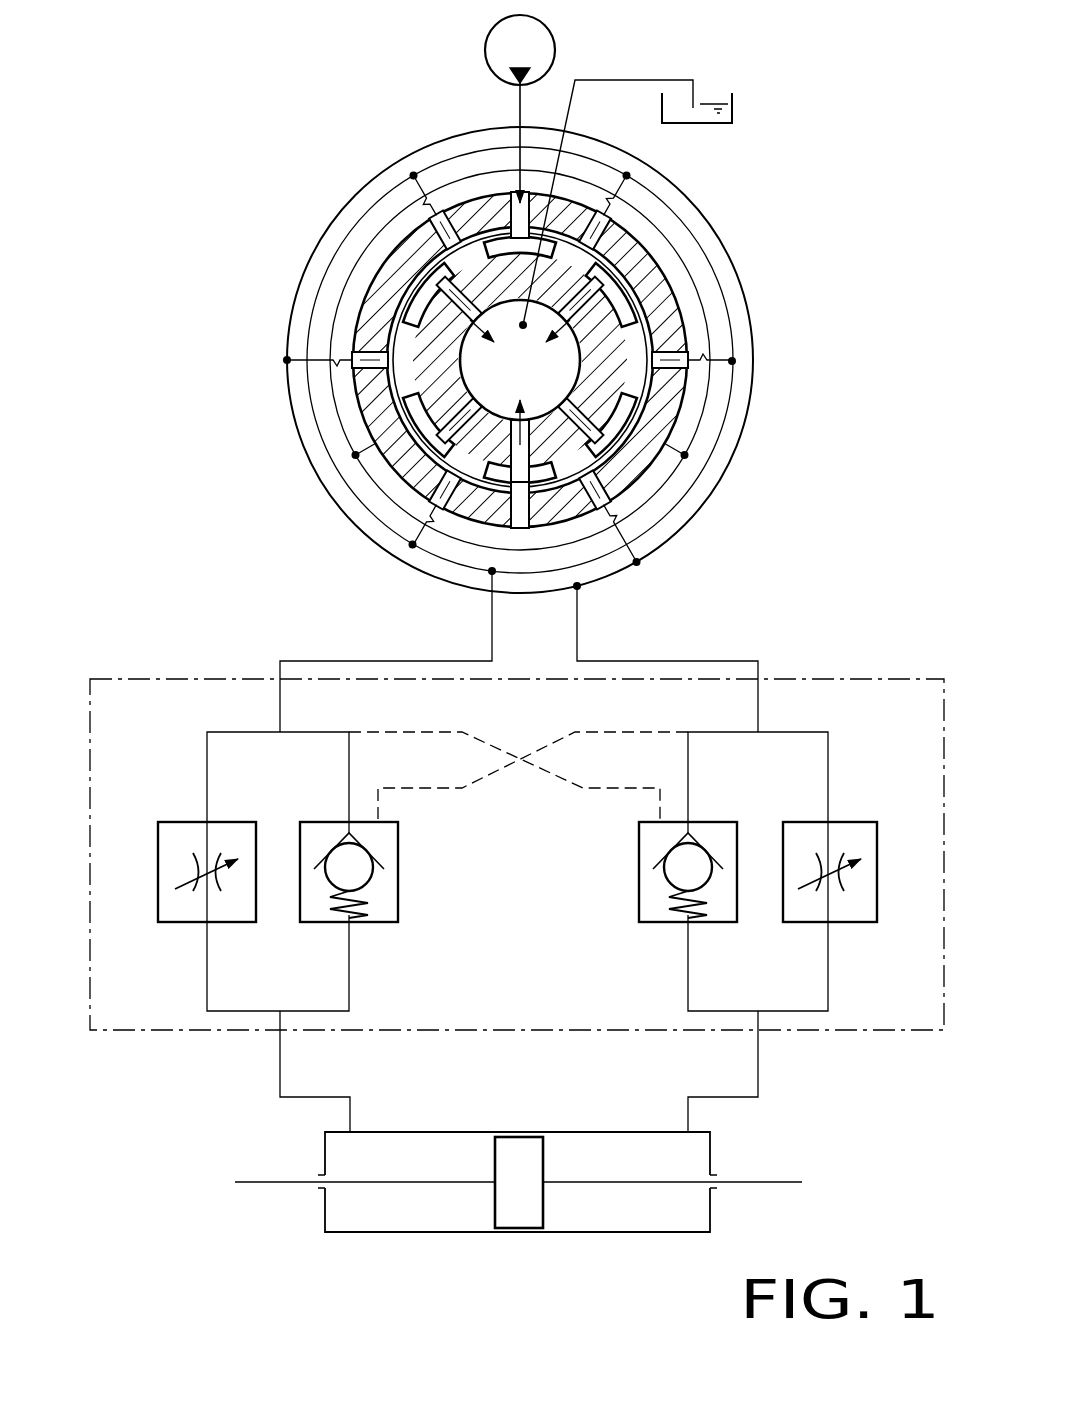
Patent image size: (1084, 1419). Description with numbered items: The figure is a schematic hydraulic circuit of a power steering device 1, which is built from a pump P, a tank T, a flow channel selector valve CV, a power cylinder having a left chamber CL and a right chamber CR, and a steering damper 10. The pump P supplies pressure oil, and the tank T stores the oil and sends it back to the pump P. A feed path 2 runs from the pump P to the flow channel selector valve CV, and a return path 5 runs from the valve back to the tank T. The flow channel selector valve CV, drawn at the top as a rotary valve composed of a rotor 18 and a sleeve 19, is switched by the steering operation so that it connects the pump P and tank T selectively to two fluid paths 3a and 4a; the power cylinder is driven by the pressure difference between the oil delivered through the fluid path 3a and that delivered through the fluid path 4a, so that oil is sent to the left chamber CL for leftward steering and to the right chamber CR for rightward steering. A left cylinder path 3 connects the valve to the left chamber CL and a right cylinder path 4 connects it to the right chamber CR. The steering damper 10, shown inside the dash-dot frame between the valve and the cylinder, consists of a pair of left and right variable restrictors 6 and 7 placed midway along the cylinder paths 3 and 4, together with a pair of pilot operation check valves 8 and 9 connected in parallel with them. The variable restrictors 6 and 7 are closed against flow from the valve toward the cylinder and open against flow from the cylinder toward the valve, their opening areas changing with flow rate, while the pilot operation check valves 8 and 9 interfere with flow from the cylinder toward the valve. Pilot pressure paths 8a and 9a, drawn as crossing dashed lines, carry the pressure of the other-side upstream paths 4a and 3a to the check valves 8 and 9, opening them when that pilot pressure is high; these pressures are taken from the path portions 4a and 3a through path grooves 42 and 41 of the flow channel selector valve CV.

The power steering device 1 is at (805, 188).
The feed path 2 is at (519, 106).
The left cylinder path 3 is at (274, 1058).
The fluid path (upstream path of left cylinder path) 3a is at (280, 705).
The right cylinder path 4 is at (764, 1074).
The fluid path (upstream path of right cylinder path) 4a is at (760, 720).
The return path 5 is at (652, 80).
The left variable restrictor 6 is at (185, 822).
The right variable restrictor 7 is at (862, 822).
The left pilot operation check valve 8 is at (398, 895).
The pilot pressure path 8a is at (462, 790).
The right pilot operation check valve 9 is at (639, 892).
The pilot pressure path 9a is at (583, 790).
The steering damper 10 is at (912, 679).
The rotor 18 is at (660, 415).
The sleeve 19 is at (680, 385).
The path groove 41 is at (322, 455).
The path groove 42 is at (703, 516).
The flow channel selector valve CV is at (686, 326).
The pump P is at (509, 50).
The tank T is at (707, 101).
The left chamber CL is at (410, 1264).
The right chamber CR is at (630, 1264).